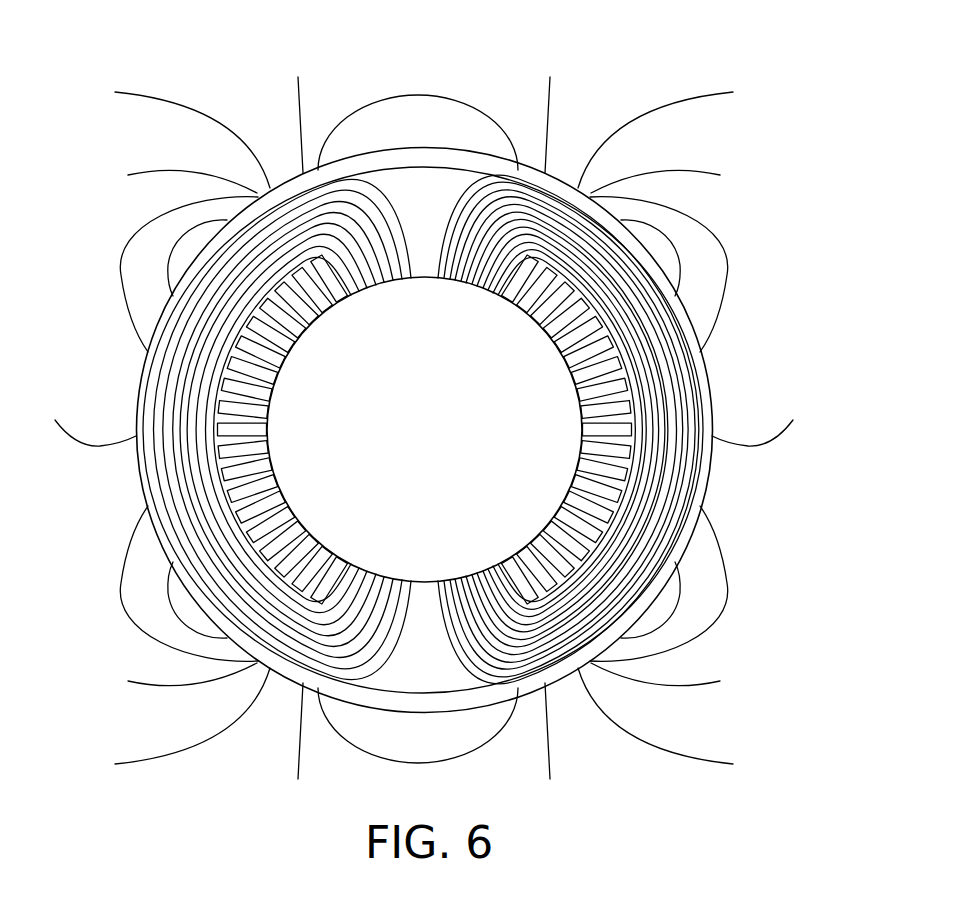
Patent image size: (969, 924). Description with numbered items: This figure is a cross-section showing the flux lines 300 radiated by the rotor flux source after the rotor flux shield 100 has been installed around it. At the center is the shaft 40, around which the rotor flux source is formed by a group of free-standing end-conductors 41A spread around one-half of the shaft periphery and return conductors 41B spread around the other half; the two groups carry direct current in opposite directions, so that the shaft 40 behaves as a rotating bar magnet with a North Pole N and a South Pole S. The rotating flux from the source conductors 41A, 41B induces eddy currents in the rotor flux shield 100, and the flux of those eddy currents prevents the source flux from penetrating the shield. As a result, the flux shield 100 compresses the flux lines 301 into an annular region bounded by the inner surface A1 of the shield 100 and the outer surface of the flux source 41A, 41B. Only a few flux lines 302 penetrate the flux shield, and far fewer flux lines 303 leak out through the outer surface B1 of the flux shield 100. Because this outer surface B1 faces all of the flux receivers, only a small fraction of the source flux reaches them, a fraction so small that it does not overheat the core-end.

The rotor flux shield 100 is at (422, 148).
The flux lines 300 is at (765, 153).
The compressed flux lines 301 is at (187, 402).
The penetrating flux lines 302 is at (697, 363).
The leaking flux lines 303 is at (652, 108).
The shaft 40 is at (520, 307).
The free-standing end-conductors 41A is at (307, 256).
The return conductors 41B is at (523, 252).
The inner surface of the flux shield A1 is at (653, 330).
The outer surface of the flux shield B1 is at (715, 467).